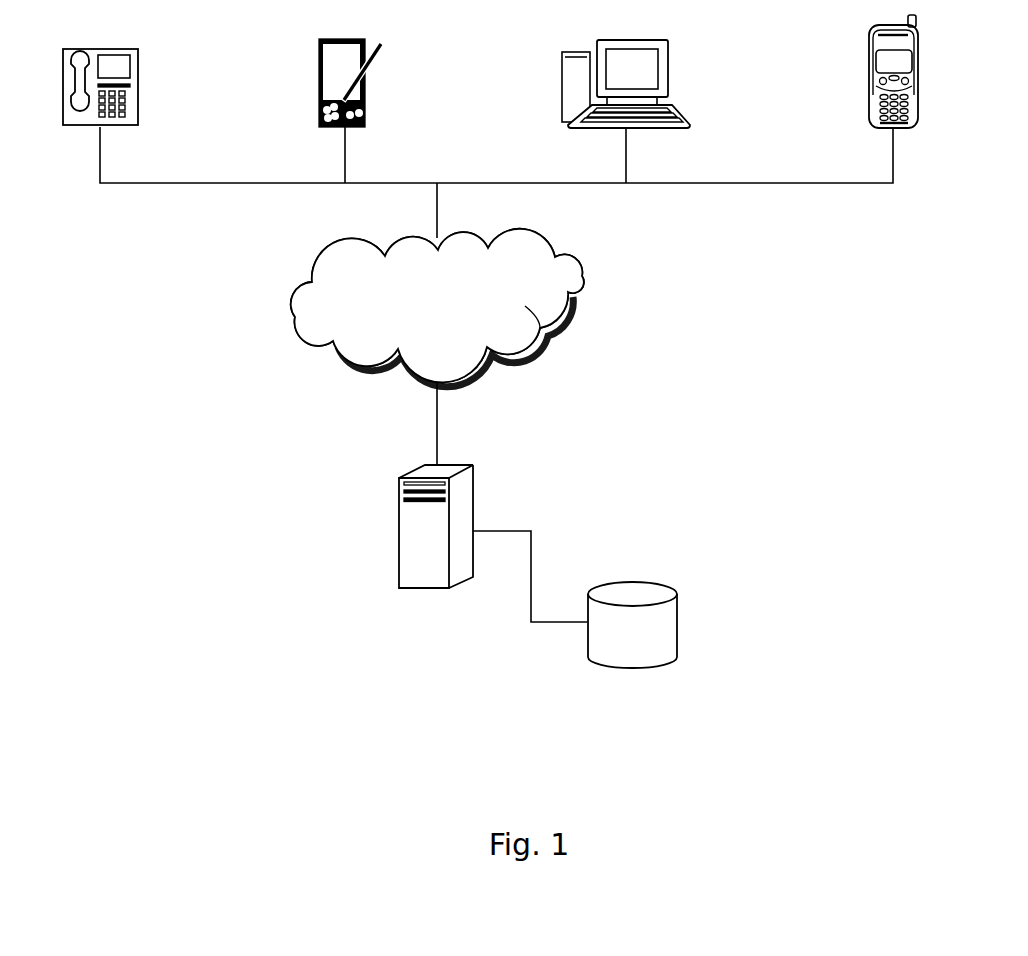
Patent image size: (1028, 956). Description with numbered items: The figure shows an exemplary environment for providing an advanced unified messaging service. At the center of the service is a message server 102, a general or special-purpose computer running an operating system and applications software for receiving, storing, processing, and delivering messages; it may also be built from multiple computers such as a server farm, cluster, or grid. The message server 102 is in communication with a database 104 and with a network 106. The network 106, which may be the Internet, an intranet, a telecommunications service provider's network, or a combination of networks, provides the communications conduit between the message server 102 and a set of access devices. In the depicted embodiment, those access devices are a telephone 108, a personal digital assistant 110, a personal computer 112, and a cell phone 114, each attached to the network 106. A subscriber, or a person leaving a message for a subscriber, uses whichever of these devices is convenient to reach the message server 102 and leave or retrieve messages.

The message server 102 is at (475, 503).
The database 104 is at (677, 605).
The network 106 is at (580, 265).
The telephone 108 is at (139, 88).
The personal digital assistant 110 is at (366, 90).
The personal computer 112 is at (672, 79).
The cell phone 114 is at (918, 69).